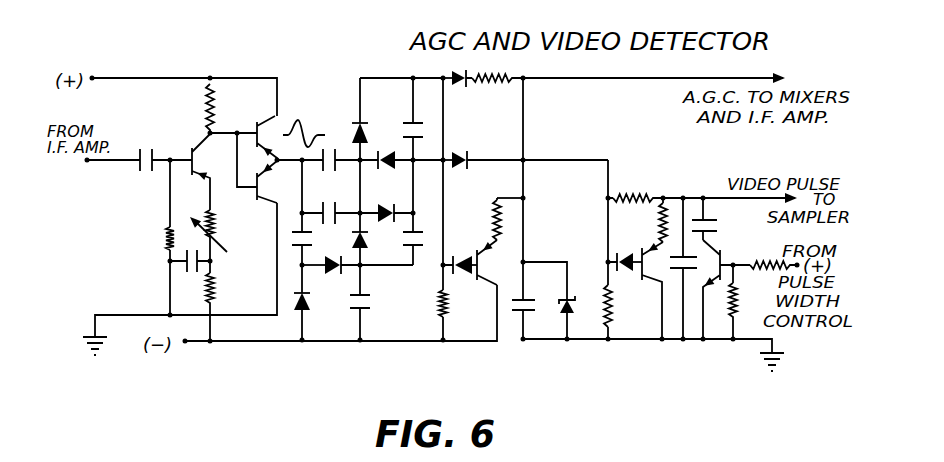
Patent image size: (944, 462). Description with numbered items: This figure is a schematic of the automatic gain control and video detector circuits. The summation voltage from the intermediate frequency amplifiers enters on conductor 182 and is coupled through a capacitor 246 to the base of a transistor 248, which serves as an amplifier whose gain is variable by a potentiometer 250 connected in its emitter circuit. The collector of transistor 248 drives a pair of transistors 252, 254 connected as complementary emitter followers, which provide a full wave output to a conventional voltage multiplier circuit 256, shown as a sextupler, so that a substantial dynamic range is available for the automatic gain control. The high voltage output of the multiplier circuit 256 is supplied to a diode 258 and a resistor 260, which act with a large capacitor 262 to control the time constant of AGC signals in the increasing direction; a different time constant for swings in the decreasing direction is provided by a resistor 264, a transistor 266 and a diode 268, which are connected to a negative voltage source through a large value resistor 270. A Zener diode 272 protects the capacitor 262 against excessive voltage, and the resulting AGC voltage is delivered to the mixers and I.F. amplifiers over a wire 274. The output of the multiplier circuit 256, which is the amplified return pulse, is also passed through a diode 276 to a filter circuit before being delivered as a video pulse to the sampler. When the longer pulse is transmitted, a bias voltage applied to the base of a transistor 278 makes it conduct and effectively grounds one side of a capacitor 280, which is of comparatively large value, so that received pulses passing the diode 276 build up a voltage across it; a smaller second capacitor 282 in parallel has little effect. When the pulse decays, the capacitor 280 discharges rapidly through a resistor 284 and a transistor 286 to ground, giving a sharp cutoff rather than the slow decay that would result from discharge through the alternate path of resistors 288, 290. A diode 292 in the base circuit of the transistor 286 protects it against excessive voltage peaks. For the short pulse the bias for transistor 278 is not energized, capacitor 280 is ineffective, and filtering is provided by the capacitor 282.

The conductor 182 is at (118, 162).
The capacitor 246 is at (177, 130).
The transistor 248 is at (210, 128).
The potentiometer 250 is at (213, 232).
The transistor 252 is at (275, 114).
The transistor 254 is at (275, 206).
The voltage multiplier circuit 256 is at (378, 197).
The diode 258 is at (467, 88).
The resistor 260 is at (497, 86).
The capacitor 262 is at (524, 301).
The resistor 264 is at (494, 212).
The transistor 266 is at (494, 244).
The diode 268 is at (477, 280).
The resistor 270 is at (443, 298).
The Zener diode 272 is at (569, 300).
The wire 274 is at (607, 80).
The diode 276 is at (462, 152).
The transistor 278 is at (712, 252).
The capacitor 280 is at (706, 222).
The capacitor 282 is at (690, 290).
The resistor 284 is at (660, 215).
The transistor 286 is at (657, 246).
The resistor 288 is at (637, 197).
The resistor 290 is at (610, 310).
The diode 292 is at (626, 269).